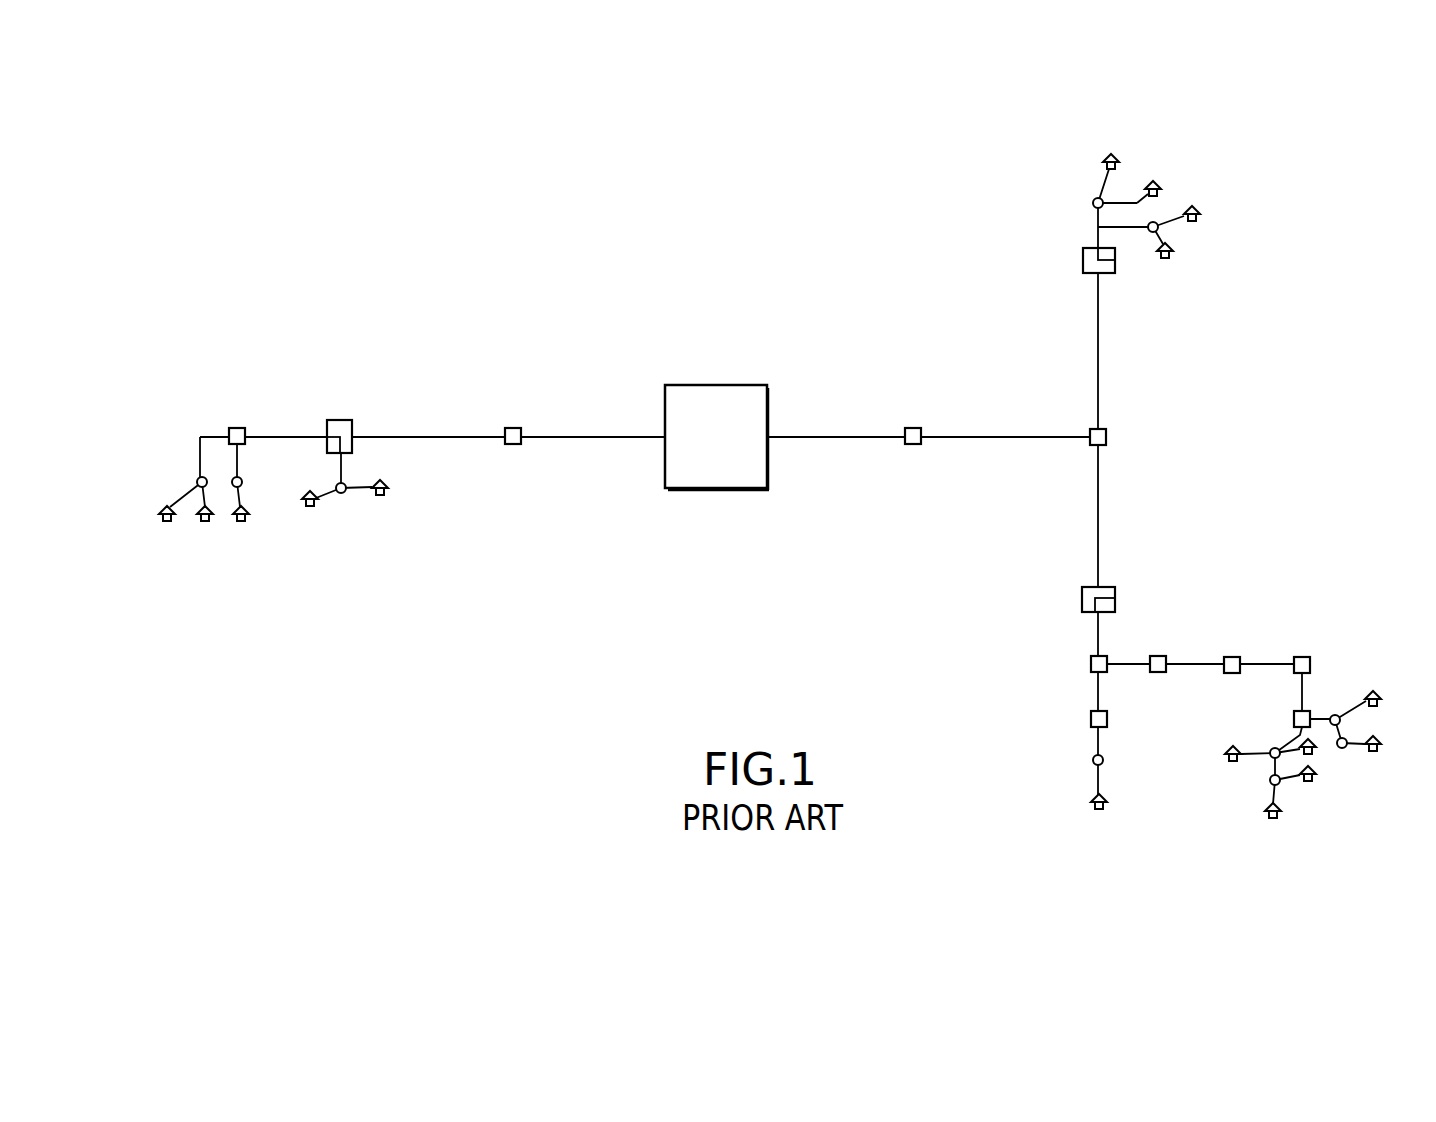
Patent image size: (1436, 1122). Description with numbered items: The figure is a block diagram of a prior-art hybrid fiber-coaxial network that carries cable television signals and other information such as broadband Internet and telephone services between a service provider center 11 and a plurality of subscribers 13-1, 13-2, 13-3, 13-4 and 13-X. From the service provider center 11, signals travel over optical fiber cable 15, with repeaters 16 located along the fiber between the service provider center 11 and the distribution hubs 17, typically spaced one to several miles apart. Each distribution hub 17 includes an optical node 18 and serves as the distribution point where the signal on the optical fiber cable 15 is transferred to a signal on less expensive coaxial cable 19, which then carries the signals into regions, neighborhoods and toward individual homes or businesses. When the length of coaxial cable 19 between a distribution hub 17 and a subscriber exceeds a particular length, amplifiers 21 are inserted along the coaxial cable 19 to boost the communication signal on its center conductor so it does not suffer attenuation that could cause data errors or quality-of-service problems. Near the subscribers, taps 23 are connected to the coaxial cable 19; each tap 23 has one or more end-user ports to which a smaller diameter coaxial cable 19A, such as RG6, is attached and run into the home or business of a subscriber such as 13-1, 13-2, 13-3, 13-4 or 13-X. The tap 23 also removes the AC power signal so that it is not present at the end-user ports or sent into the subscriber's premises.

The service provider center 11 is at (726, 451).
The subscriber 13-1 is at (1105, 158).
The subscriber 13-2 is at (1158, 186).
The subscriber 13-3 is at (1200, 209).
The subscriber 13-4 is at (1382, 695).
The subscriber 13-X is at (1107, 805).
The optical fiber cable 15 is at (425, 436).
The repeater 16 is at (513, 427).
The distribution hub 17 is at (340, 419).
The optical node 18 is at (333, 446).
The coaxial cable 19 is at (198, 457).
The smaller diameter coaxial cable 19A is at (190, 498).
The amplifier 21 is at (244, 444).
The tap 23 is at (197, 484).